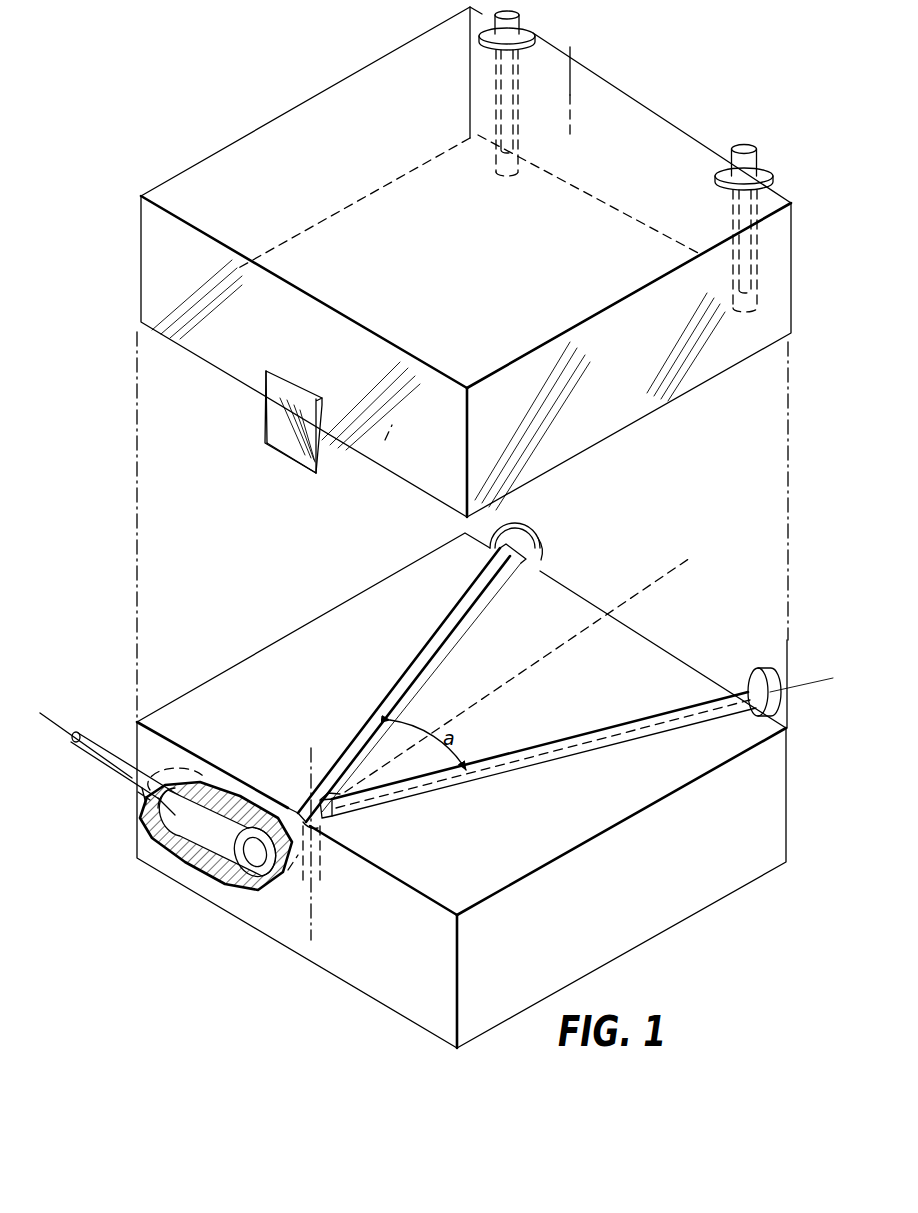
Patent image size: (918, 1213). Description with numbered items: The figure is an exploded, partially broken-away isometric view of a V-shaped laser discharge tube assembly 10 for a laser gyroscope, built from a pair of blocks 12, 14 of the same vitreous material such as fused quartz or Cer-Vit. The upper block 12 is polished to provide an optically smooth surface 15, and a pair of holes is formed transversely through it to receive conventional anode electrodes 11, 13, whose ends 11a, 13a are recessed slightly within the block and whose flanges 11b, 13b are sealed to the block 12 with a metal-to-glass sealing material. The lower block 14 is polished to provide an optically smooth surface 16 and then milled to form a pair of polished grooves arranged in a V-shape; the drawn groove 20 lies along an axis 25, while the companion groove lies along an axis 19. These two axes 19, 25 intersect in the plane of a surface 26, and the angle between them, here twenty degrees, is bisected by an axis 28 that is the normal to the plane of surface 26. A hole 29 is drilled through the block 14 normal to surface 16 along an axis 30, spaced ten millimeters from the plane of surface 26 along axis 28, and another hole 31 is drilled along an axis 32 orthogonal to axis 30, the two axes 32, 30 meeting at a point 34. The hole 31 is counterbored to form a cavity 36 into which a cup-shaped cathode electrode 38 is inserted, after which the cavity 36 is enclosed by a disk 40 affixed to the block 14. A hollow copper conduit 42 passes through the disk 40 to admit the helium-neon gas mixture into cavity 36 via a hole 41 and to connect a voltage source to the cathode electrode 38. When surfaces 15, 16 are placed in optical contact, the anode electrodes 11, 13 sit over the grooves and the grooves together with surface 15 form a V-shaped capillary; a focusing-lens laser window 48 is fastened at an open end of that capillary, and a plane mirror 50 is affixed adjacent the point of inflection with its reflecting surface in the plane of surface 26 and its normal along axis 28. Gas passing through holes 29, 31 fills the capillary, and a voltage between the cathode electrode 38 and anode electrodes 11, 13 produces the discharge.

The laser discharge tube assembly 10 is at (112, 455).
The anode electrode 11 is at (505, 93).
The end of anode electrode 11a is at (514, 146).
The flange of anode electrode 11b is at (481, 46).
The block 12 is at (247, 140).
The anode electrode 13 is at (713, 229).
The end of anode electrode 13a is at (733, 256).
The flange of anode electrode 13b is at (716, 175).
The block 14 is at (461, 790).
The optically smooth surface 15 is at (385, 445).
The optically smooth surface 16 is at (292, 694).
The axis 19 is at (538, 527).
The groove 20 is at (610, 738).
The axis 25 is at (808, 688).
The surface 26 is at (428, 975).
The axis 28 is at (645, 595).
The hole 29 is at (325, 828).
The axis 30 is at (311, 766).
The hole 31 is at (292, 875).
The axis 32 is at (62, 722).
The point 34 is at (318, 885).
The cavity 36 is at (172, 848).
The cathode electrode 38 is at (190, 862).
The disk 40 is at (136, 780).
The hole 41 is at (152, 824).
The hollow copper conduit 42 is at (107, 740).
The laser window 48 is at (785, 673).
The plane mirror 50 is at (262, 416).